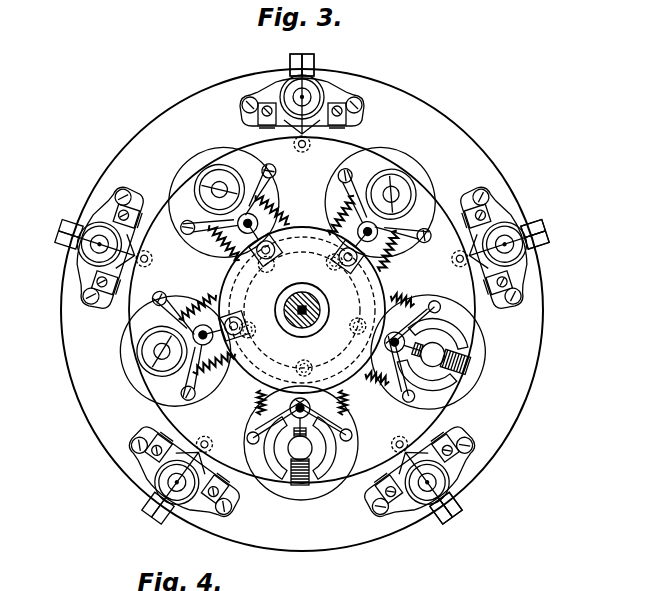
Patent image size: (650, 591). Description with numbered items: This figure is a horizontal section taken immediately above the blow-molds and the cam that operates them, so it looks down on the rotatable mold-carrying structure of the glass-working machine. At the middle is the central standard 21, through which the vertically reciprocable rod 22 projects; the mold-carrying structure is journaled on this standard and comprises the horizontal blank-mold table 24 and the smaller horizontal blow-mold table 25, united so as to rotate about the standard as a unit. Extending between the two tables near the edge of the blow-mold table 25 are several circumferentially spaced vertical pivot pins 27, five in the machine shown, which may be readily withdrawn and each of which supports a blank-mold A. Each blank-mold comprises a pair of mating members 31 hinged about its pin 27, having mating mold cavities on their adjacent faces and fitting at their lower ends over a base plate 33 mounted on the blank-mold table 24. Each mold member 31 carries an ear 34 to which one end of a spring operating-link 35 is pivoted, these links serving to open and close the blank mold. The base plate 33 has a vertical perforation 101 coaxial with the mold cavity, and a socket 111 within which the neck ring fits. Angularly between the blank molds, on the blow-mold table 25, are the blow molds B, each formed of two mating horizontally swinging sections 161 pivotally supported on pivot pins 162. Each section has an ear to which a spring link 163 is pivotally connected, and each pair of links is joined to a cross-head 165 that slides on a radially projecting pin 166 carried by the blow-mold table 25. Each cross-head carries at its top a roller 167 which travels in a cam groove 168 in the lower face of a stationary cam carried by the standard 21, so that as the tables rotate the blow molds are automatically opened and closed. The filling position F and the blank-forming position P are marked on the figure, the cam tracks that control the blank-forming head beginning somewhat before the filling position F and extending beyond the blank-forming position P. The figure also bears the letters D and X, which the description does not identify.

The central standard 21 is at (287, 338).
The vertically reciprocable rod 22 is at (322, 332).
The blank-mold table 24 is at (538, 398).
The blow-mold table 25 is at (468, 387).
The vertical pivot pin 27 is at (302, 150).
The blank mold member 31 is at (70, 252).
The base plate 33 is at (167, 497).
The ear 34 is at (267, 93).
The spring operating-link 35 is at (255, 123).
The vertical perforation 101 is at (177, 497).
The socket 111 is at (185, 500).
The blow mold section 161 is at (377, 167).
The pivot pin 162 is at (233, 267).
The spring link 163 is at (273, 188).
The cross-head 165 is at (298, 233).
The radially projecting pin 166 is at (282, 300).
The roller 167 is at (302, 257).
The cam groove 168 is at (345, 357).
The blank-mold A is at (80, 215).
The blow mold B is at (197, 182).
The unit D is at (470, 492).
The filling position F is at (304, 54).
The blank-forming position P is at (550, 228).
The slide X is at (313, 485).